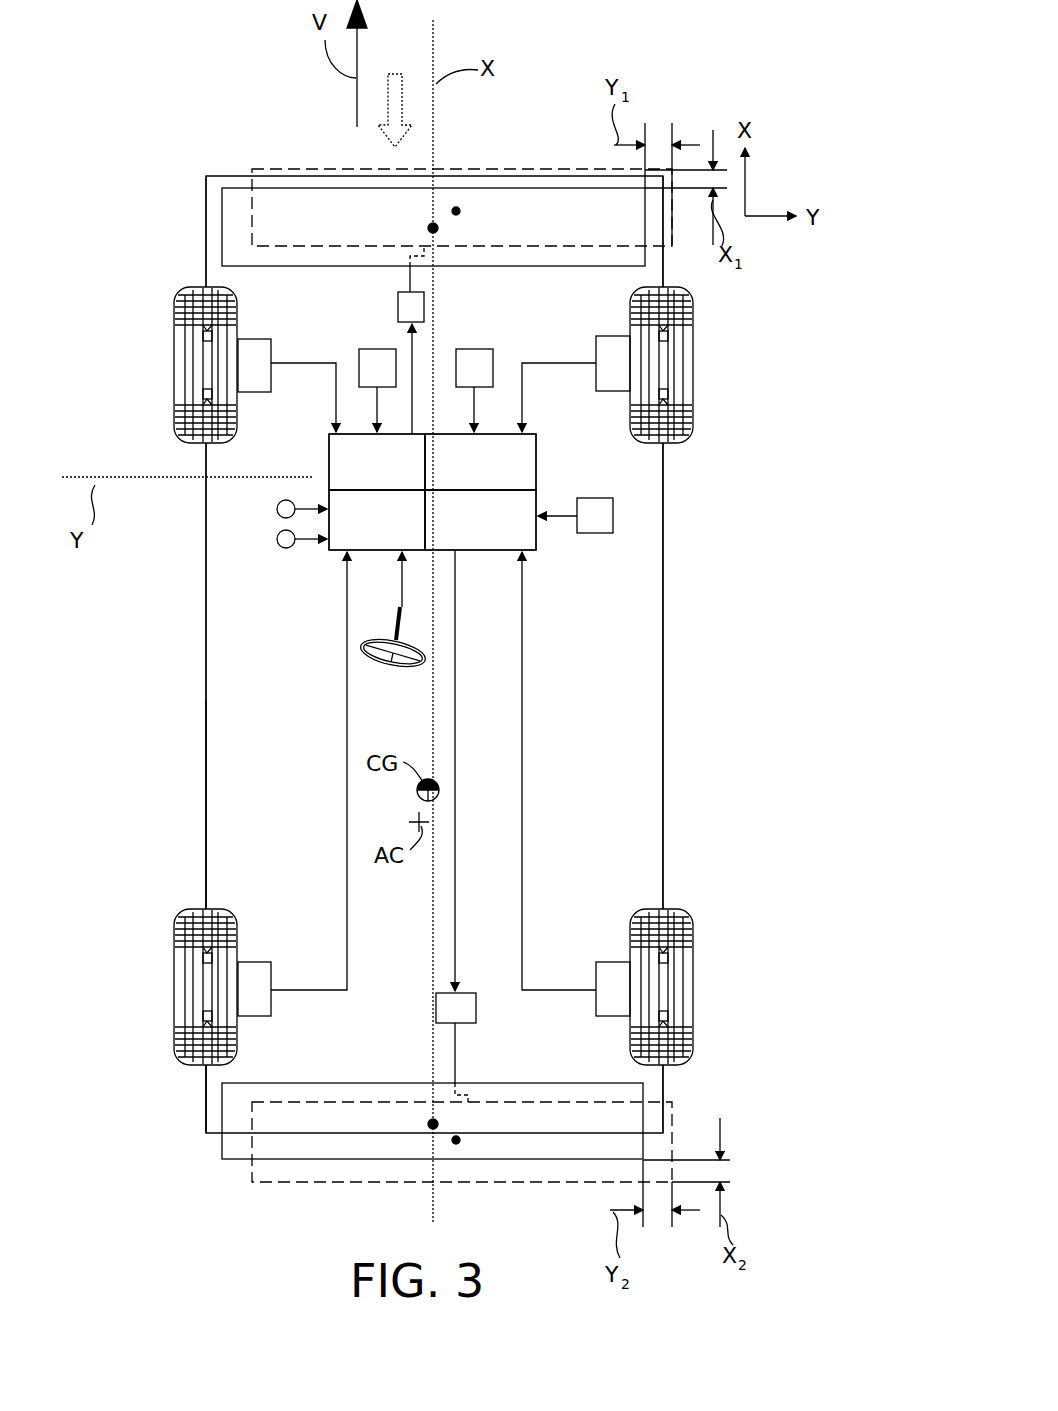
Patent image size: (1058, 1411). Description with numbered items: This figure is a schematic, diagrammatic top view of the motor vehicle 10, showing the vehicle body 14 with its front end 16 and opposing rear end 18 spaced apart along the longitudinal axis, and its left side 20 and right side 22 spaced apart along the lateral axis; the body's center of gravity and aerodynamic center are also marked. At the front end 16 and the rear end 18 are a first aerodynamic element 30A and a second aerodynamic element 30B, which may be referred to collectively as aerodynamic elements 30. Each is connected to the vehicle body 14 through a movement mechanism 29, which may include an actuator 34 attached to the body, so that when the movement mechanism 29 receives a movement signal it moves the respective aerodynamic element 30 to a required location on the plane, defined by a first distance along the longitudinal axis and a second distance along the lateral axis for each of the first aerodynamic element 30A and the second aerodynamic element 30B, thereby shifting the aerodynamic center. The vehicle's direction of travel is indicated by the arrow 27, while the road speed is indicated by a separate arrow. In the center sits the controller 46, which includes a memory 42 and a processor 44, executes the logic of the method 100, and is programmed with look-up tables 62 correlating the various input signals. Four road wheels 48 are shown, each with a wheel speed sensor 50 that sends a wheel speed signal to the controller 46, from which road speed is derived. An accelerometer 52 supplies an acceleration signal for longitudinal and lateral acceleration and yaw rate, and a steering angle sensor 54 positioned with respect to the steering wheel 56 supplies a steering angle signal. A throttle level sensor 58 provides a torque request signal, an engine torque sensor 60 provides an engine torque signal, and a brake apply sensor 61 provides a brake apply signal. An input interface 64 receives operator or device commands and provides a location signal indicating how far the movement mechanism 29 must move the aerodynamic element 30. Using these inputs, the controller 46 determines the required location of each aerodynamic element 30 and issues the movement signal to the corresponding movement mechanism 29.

The motor vehicle 10 is at (695, 98).
The vehicle body 14 is at (206, 618).
The front end 16 is at (527, 186).
The rear end 18 is at (517, 1140).
The left side 20 is at (206, 738).
The right side 22 is at (663, 639).
The direction of travel arrow 27 is at (395, 73).
The movement mechanism 29 is at (424, 302).
The aerodynamic element 30 is at (240, 198).
The first aerodynamic element 30A is at (272, 212).
The second aerodynamic element 30B is at (580, 1150).
The actuator 34 is at (412, 278).
The memory 42 is at (377, 462).
The processor 44 is at (377, 520).
The controller 46 is at (536, 456).
The road wheel 48 is at (186, 348).
The wheel speed sensor 50 is at (553, 886).
The accelerometer 52 is at (578, 524).
The steering angle sensor 54 is at (403, 620).
The steering wheel 56 is at (393, 662).
The throttle level sensor 58 is at (277, 510).
The engine torque sensor 60 is at (480, 424).
The brake apply sensor 61 is at (277, 540).
The look-up tables 62 is at (480, 462).
The input interface 64 is at (372, 424).
The method 100 is at (480, 520).